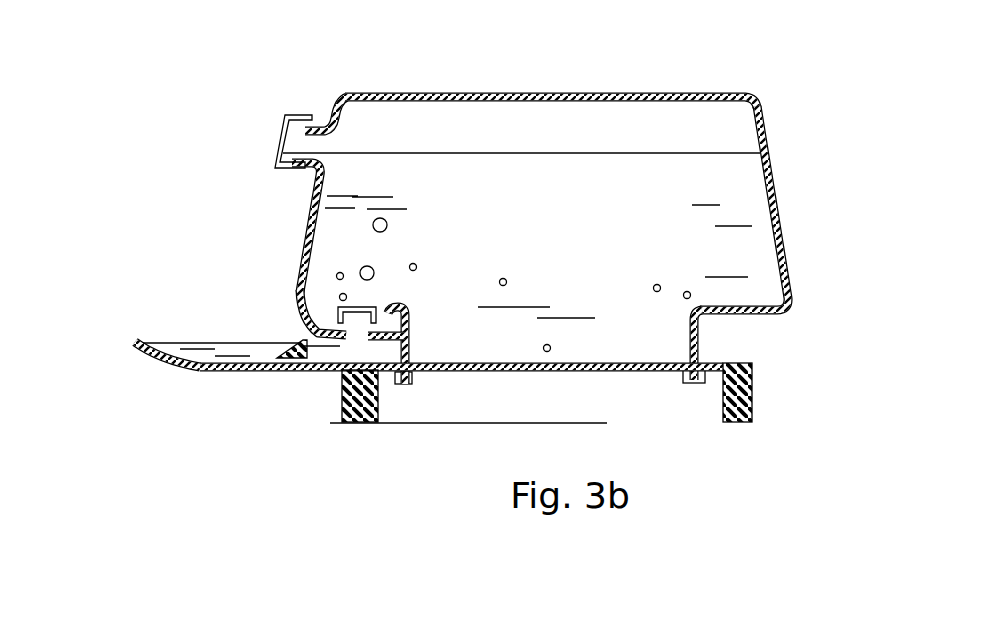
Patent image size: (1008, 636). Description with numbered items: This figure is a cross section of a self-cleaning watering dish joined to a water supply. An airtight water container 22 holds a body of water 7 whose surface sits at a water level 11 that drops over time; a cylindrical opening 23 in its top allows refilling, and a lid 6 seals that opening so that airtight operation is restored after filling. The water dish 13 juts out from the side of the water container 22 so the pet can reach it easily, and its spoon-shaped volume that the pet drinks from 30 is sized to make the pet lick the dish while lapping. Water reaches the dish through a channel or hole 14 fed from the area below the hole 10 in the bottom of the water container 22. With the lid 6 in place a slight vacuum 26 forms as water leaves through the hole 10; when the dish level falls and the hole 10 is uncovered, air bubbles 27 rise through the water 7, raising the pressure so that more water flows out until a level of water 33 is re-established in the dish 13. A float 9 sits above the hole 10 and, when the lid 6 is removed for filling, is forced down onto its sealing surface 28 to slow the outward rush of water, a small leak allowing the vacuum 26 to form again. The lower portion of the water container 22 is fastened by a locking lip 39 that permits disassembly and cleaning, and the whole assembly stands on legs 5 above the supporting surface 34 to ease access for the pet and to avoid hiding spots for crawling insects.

The cylindrical opening 23 is at (322, 120).
The vacuum 26 is at (703, 123).
The water container 22 is at (777, 195).
The water level 11 is at (735, 153).
The water 7 is at (730, 257).
The lid 6 is at (275, 160).
The air bubbles 27 is at (338, 300).
The sealing surface 28 is at (328, 334).
The float 9 is at (373, 307).
The level of water 33 is at (193, 342).
The volume that the pet drinks from 30 is at (147, 342).
The water dish 13 is at (205, 378).
The channel or hole 14 is at (290, 373).
The hole 10 is at (352, 342).
The legs 5 is at (385, 415).
The supporting surface 34 is at (495, 423).
The locking lip 39 is at (685, 376).